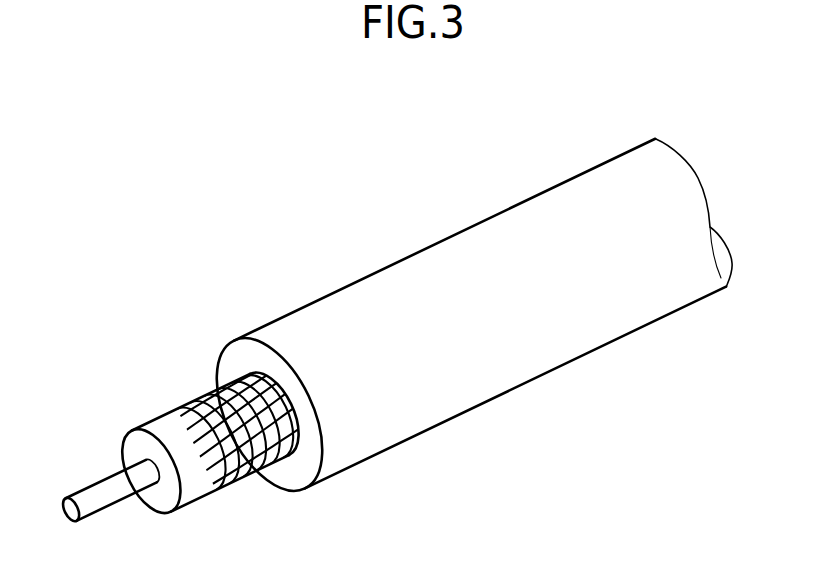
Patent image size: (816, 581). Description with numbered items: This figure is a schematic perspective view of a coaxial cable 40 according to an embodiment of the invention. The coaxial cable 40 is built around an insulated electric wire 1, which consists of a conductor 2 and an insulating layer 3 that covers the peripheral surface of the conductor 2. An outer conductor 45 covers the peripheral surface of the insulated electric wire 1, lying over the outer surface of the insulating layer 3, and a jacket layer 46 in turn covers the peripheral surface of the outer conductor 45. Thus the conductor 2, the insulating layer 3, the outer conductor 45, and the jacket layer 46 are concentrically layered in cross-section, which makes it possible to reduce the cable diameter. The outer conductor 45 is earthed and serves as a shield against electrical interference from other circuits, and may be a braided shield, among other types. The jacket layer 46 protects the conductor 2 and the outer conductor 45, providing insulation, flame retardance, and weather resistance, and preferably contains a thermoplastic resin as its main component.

The coaxial cable 40 is at (352, 180).
The jacket layer 46 is at (305, 333).
The outer conductor 45 is at (212, 398).
The insulated electric wire 1 is at (85, 357).
The conductor 2 is at (120, 483).
The insulating layer 3 is at (163, 433).